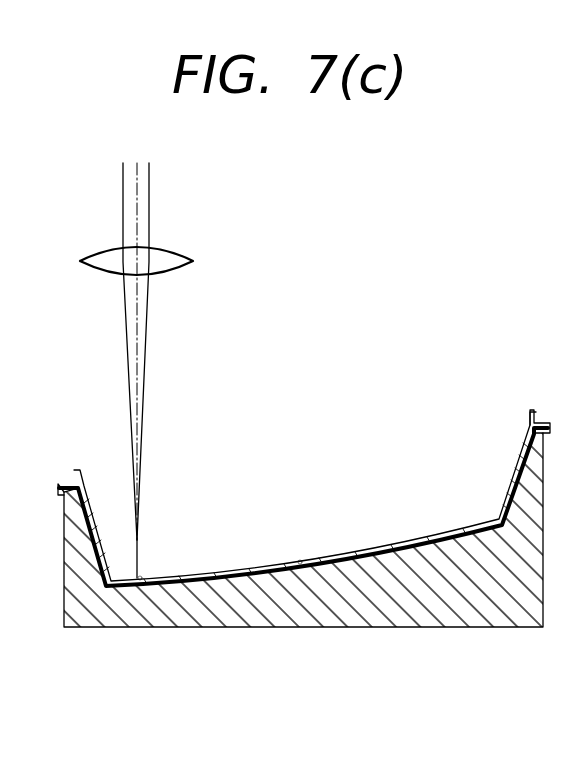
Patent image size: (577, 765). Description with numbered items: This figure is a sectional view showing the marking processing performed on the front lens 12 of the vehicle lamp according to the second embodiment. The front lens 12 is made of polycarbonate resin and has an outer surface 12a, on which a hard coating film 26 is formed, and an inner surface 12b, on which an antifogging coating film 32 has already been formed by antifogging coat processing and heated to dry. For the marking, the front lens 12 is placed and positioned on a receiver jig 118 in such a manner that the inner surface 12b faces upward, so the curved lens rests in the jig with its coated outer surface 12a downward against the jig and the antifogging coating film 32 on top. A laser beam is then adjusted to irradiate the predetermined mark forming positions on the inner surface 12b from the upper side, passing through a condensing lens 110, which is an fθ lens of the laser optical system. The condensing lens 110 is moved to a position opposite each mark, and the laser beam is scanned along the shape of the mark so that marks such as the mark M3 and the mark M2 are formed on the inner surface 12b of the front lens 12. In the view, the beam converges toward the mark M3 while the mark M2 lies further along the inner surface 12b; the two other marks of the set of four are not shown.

The receiver jig 118 is at (452, 628).
The front lens 12 is at (272, 541).
The outer surface 12a is at (397, 627).
The inner surface 12b is at (426, 538).
The antifogging coating film 32 is at (385, 550).
The hard coating film 26 is at (287, 627).
The condensing lens 110 is at (175, 272).
The mark M3 is at (143, 575).
The mark M2 is at (301, 558).